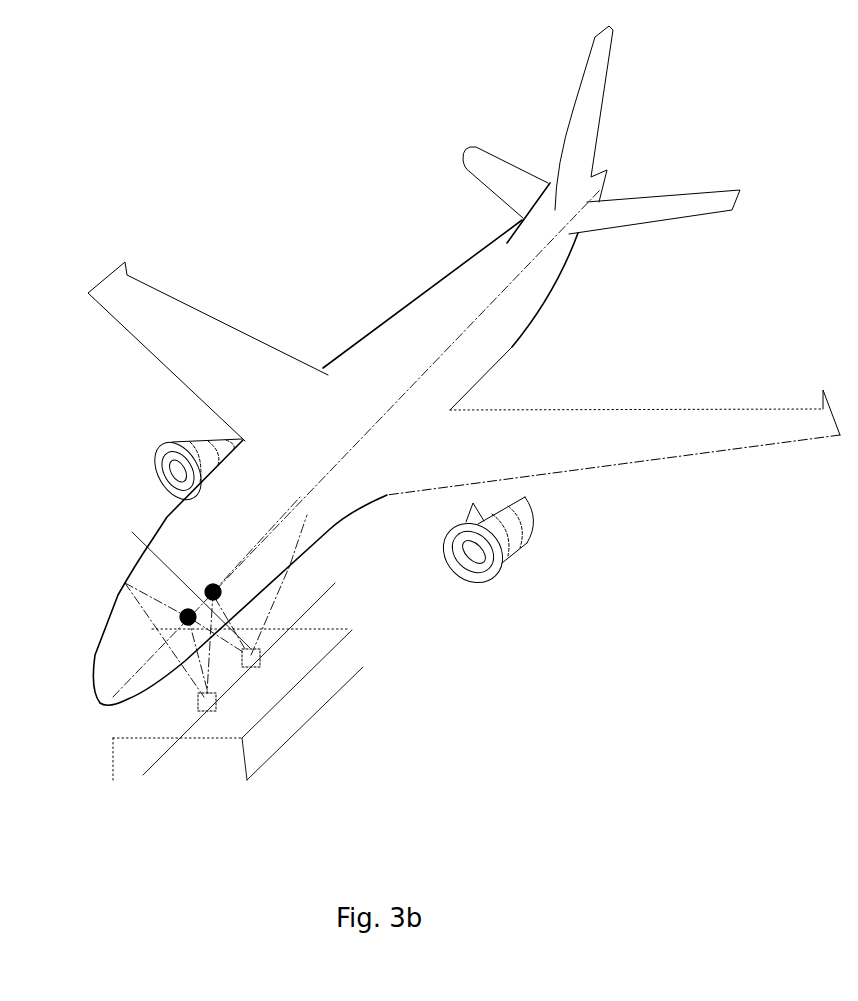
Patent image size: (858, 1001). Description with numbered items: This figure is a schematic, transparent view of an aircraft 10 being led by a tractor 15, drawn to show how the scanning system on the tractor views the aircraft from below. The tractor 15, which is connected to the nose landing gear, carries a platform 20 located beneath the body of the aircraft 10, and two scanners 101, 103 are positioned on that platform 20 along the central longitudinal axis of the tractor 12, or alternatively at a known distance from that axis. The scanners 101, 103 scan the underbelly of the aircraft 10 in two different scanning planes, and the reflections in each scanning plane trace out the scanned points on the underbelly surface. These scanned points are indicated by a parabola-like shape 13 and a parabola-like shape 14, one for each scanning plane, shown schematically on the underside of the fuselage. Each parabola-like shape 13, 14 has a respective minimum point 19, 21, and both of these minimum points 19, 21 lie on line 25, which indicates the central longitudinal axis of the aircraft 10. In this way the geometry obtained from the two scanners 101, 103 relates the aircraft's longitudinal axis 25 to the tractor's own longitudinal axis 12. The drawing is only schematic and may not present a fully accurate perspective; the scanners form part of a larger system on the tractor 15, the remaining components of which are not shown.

The aircraft 10 is at (512, 347).
The longitudinal axis of the aircraft 25 is at (403, 393).
The parabola-like shape 13 is at (272, 570).
The parabola-like shape 14 is at (130, 588).
The minimum point 19 is at (220, 586).
The minimum point 21 is at (181, 620).
The tractor's platform 20 is at (323, 632).
The scanner 101 is at (261, 658).
The scanner 103 is at (197, 701).
The tractor 15 is at (300, 692).
The central longitudinal axis of the tractor 12 is at (165, 752).